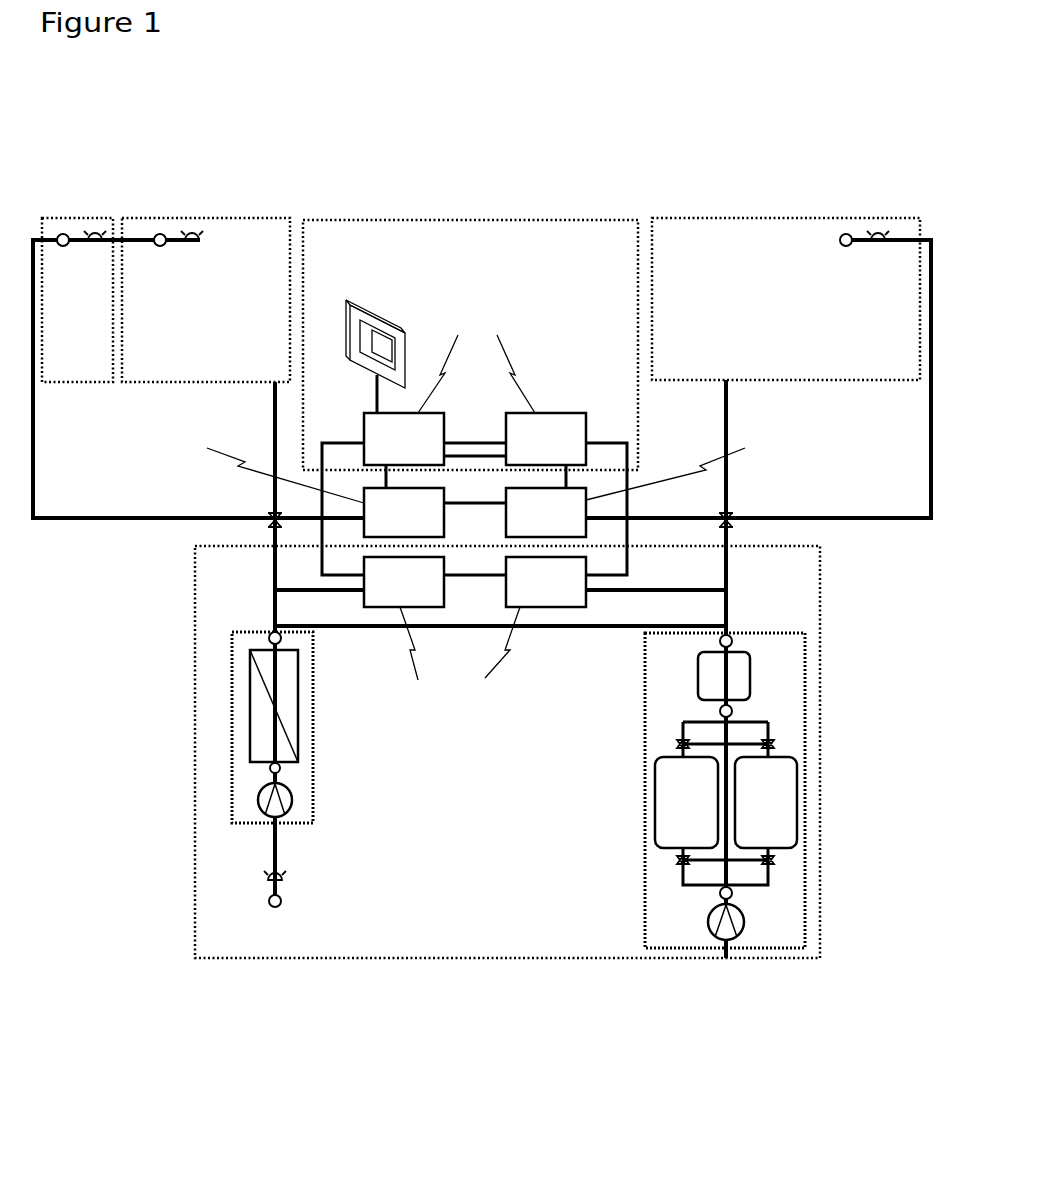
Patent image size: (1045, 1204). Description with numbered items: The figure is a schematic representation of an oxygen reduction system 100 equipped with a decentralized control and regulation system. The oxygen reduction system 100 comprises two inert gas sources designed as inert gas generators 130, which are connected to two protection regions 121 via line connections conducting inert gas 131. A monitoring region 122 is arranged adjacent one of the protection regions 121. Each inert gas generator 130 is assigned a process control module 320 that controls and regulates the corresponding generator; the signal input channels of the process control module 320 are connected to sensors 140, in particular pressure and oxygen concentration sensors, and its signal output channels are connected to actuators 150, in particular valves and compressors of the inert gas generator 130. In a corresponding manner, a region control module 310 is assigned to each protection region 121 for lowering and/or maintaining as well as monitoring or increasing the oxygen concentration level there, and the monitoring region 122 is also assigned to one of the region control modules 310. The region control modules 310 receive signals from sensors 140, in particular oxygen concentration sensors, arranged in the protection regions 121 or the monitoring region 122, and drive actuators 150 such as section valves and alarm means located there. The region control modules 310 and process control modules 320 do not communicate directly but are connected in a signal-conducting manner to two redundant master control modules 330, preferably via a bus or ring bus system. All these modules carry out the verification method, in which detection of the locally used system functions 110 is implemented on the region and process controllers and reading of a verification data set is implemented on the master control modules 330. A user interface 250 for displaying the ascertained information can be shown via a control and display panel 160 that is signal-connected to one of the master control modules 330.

The oxygen reduction system 100 is at (502, 73).
The system functions 110 is at (480, 795).
The protection region 121 is at (234, 317).
The monitoring region 122 is at (103, 317).
The inert gas generator 130 is at (484, 790).
The line connection conducting inert gas 131 is at (475, 669).
The sensor 140 is at (493, 512).
The actuator 150 is at (722, 1012).
The control and display panel 160 is at (428, 262).
The user interface 250 is at (456, 262).
The region control module 310 is at (500, 470).
The process control module 320 is at (475, 645).
The master control module 330 is at (474, 422).